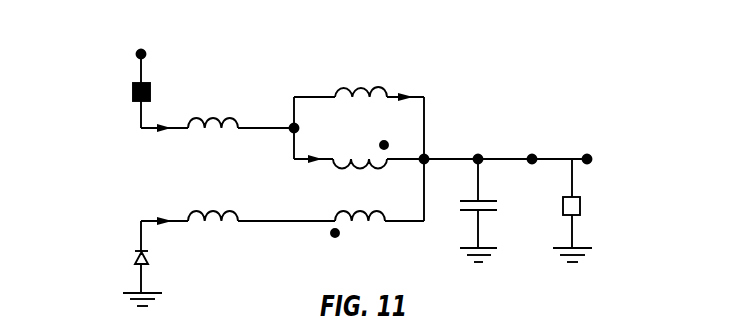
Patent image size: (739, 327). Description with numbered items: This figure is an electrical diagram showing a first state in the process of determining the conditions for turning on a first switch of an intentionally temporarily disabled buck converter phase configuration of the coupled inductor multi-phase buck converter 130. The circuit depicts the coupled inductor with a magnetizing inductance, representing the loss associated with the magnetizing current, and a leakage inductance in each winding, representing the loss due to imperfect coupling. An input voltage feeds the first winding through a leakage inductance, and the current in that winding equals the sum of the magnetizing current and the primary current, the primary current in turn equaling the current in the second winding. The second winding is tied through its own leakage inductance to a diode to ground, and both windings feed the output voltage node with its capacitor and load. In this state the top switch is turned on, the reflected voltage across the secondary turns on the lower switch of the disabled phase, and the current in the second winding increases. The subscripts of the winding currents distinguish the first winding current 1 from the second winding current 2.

The coupled inductor multi-phase buck converter 130 is at (347, 159).
The input current path (i1) 1 is at (197, 101).
The output current path (i2) 2 is at (229, 241).